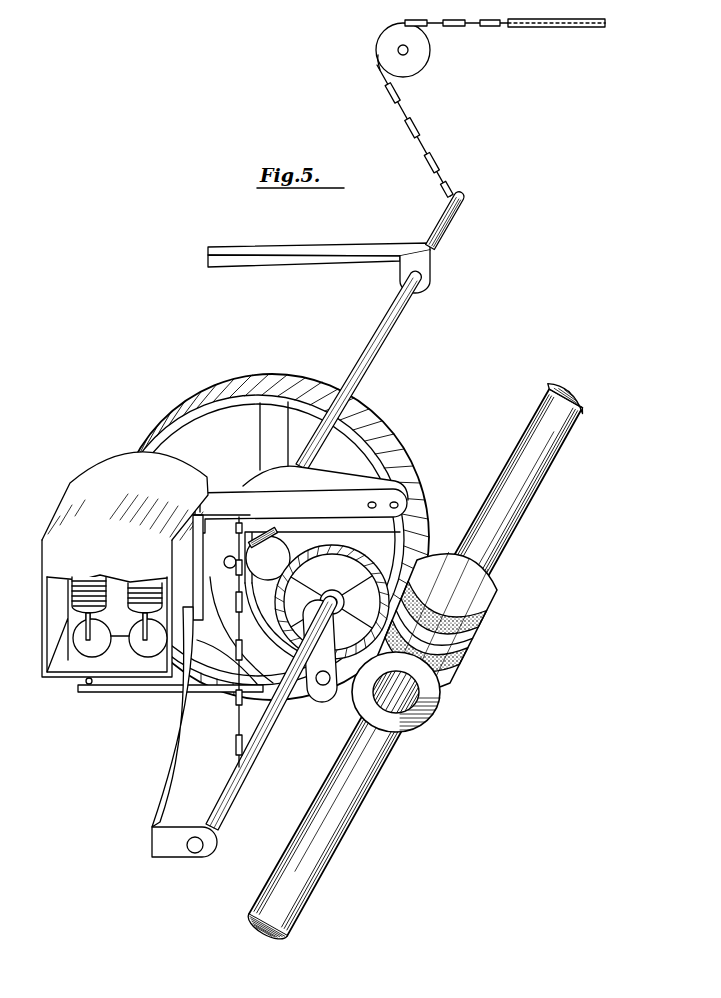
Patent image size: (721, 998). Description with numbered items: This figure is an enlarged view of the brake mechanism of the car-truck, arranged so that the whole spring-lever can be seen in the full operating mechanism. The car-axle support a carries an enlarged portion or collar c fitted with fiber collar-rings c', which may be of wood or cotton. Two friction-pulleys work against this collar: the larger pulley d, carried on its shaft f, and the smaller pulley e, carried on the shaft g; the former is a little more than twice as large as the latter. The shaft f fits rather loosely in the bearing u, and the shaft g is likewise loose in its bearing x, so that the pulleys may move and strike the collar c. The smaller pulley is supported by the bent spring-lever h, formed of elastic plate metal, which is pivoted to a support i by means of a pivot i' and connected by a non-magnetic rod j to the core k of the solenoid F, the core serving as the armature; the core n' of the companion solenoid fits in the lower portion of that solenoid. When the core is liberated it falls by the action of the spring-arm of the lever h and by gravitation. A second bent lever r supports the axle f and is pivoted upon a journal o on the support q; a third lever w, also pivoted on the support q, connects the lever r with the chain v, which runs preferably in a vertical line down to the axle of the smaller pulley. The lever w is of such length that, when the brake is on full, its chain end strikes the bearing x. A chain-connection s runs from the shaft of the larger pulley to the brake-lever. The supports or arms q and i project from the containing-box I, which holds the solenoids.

The chain-connection s is at (489, 108).
The bearing u is at (337, 241).
The shaft f is at (385, 332).
The friction-pulley d is at (270, 537).
The second bent lever r is at (300, 477).
The third lever w is at (301, 511).
The friction-pulley e is at (335, 602).
The support i is at (235, 633).
The pivot i' is at (320, 664).
The containing-box I is at (125, 564).
The solenoid F is at (72, 588).
The core k is at (139, 610).
The roller k' is at (148, 635).
The core n' is at (81, 642).
The non-magnetic rod j is at (120, 632).
The bent lever h is at (134, 698).
The support q is at (221, 567).
The journal o is at (230, 556).
The chain v is at (234, 710).
The shaft g is at (250, 755).
The bearing x is at (222, 840).
The car-axle support a is at (416, 662).
The collar c is at (437, 621).
The collar-rings c' is at (425, 692).